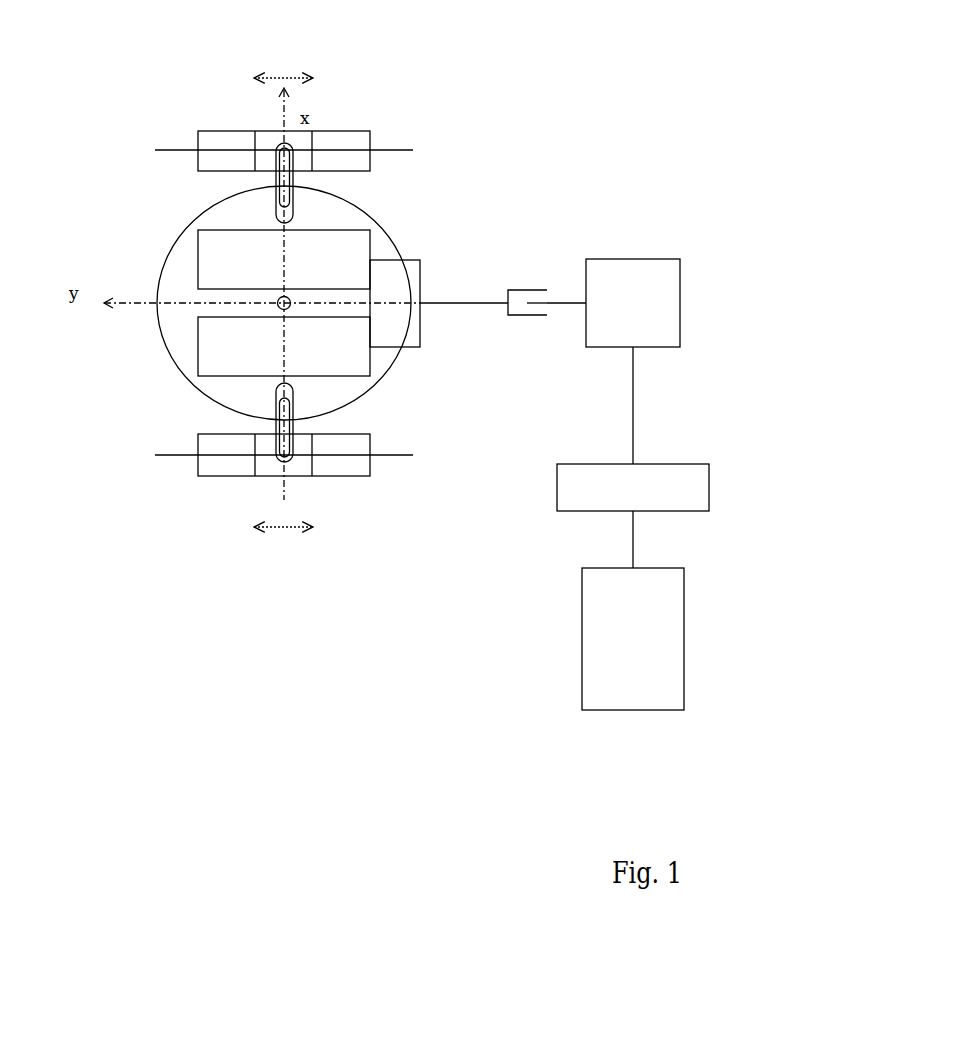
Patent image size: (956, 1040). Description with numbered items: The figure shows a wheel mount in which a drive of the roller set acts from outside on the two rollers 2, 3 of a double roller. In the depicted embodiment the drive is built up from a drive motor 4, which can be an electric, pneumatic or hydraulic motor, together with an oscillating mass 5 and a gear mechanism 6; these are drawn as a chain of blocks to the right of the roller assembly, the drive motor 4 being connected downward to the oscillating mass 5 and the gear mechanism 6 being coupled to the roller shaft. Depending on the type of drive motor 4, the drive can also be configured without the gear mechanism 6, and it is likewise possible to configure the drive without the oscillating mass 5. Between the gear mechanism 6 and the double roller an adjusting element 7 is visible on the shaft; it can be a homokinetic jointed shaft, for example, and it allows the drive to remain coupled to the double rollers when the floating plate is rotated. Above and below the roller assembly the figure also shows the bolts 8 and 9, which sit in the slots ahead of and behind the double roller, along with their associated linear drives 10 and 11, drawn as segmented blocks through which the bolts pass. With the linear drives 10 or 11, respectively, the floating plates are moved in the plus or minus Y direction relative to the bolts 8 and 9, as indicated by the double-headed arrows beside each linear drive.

The roller 2 is at (195, 255).
The roller 3 is at (195, 342).
The drive motor 4 is at (687, 668).
The oscillating mass 5 is at (650, 464).
The gear mechanism 6 is at (620, 256).
The adjusting element 7 is at (525, 286).
The bolt 8 is at (194, 119).
The bolt 9 is at (194, 582).
The linear drive 10 is at (222, 130).
The linear drive 11 is at (223, 477).